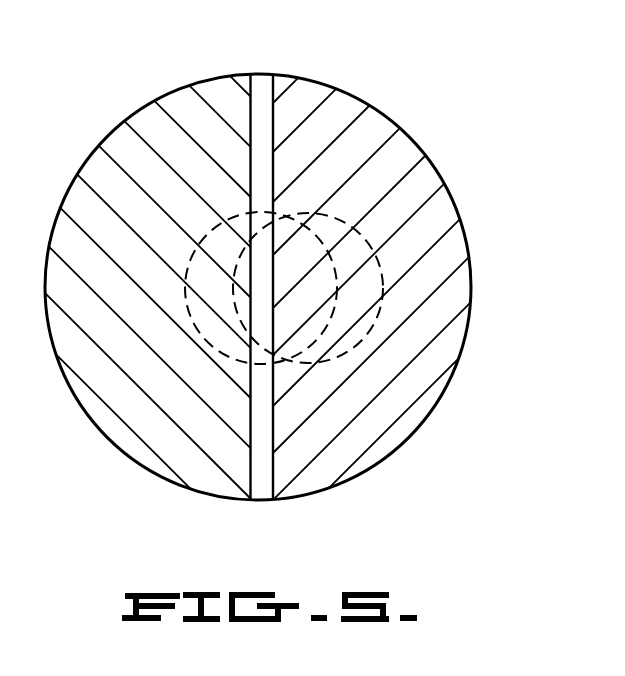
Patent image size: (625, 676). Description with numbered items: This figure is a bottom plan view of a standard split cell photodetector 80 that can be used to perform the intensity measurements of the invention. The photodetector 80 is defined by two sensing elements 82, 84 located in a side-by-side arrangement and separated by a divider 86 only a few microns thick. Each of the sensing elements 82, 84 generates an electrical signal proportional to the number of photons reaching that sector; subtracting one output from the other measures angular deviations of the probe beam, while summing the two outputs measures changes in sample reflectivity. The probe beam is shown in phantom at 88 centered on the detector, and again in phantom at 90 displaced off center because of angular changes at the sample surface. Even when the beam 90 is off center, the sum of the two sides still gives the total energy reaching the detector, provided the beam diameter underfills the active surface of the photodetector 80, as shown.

The photodetector 80 is at (430, 115).
The sensing element 82 is at (198, 487).
The sensing element 84 is at (370, 466).
The divider 86 is at (260, 78).
The probe beam 88 is at (197, 351).
The probe beam 90 is at (378, 256).